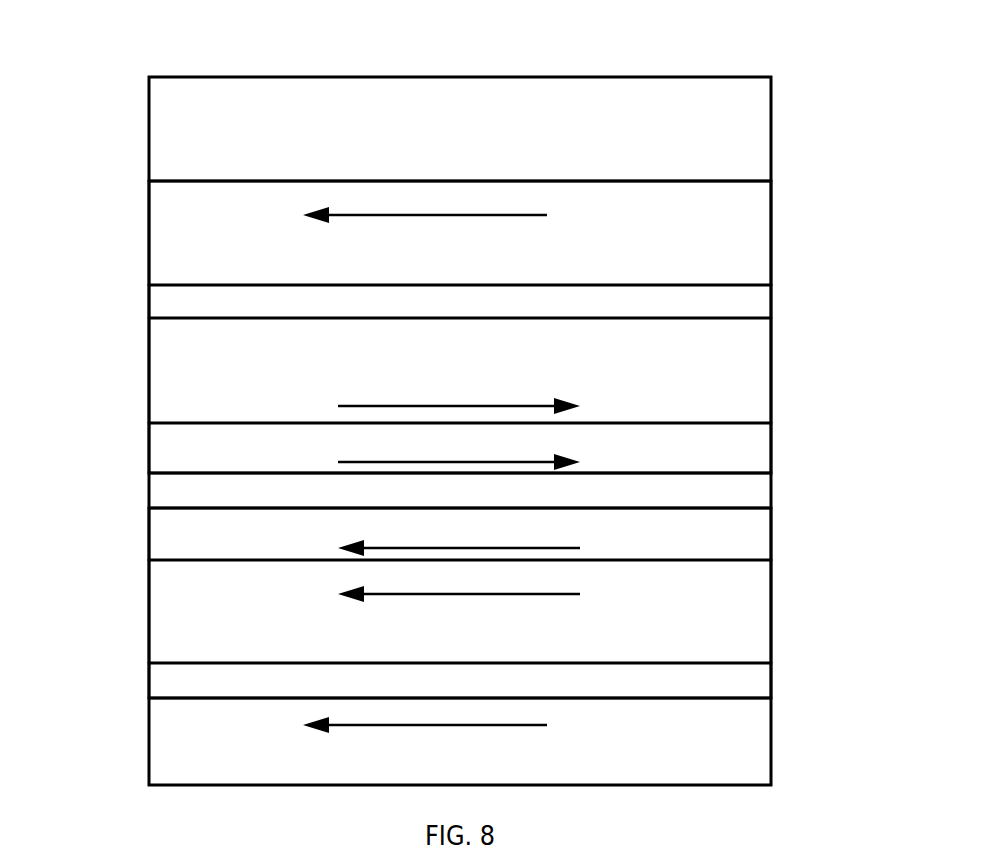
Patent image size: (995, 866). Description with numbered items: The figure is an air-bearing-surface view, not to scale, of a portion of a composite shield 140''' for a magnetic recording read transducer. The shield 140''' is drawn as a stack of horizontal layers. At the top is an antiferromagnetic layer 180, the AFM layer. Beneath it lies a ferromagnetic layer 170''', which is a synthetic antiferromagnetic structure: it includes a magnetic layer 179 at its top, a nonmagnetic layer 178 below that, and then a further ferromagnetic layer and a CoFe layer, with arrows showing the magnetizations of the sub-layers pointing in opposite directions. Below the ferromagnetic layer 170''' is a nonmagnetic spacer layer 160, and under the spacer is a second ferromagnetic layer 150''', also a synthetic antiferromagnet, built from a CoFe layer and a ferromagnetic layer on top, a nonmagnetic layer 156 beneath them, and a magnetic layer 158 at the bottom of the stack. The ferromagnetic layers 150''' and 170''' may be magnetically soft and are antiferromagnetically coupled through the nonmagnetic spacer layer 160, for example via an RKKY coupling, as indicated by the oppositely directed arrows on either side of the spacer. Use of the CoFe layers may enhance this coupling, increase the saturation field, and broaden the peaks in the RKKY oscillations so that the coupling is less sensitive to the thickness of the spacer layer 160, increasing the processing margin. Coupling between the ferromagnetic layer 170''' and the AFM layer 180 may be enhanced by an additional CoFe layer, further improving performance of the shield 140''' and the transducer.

The shield 140''' is at (460, 399).
The antiferromagnetic layer 180 is at (148, 145).
The magnetic layer 179 is at (771, 250).
The nonmagnetic layer 178 is at (149, 300).
The ferromagnetic layer 170''' is at (394, 327).
The nonmagnetic spacer layer 160 is at (149, 490).
The ferromagnetic layer 150''' is at (395, 603).
The nonmagnetic layer 156 is at (771, 675).
The magnetic layer 158 is at (149, 725).